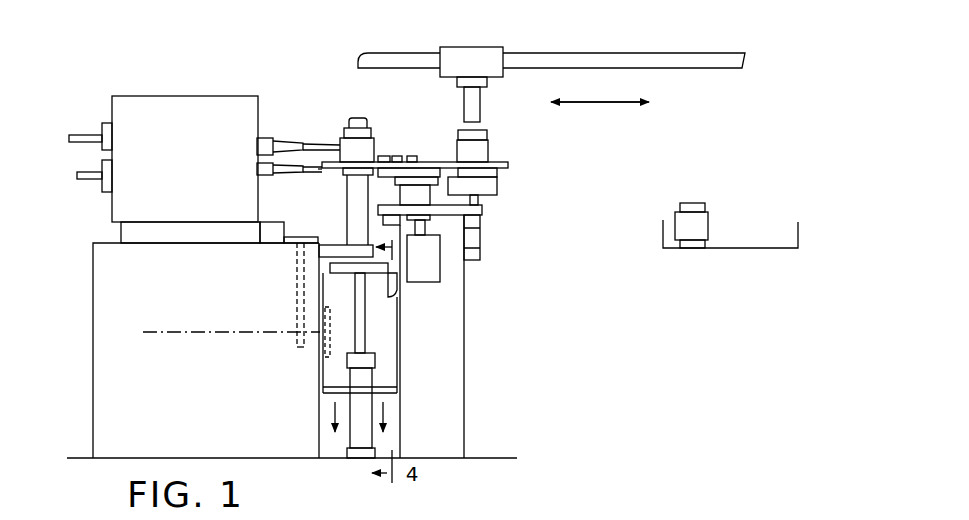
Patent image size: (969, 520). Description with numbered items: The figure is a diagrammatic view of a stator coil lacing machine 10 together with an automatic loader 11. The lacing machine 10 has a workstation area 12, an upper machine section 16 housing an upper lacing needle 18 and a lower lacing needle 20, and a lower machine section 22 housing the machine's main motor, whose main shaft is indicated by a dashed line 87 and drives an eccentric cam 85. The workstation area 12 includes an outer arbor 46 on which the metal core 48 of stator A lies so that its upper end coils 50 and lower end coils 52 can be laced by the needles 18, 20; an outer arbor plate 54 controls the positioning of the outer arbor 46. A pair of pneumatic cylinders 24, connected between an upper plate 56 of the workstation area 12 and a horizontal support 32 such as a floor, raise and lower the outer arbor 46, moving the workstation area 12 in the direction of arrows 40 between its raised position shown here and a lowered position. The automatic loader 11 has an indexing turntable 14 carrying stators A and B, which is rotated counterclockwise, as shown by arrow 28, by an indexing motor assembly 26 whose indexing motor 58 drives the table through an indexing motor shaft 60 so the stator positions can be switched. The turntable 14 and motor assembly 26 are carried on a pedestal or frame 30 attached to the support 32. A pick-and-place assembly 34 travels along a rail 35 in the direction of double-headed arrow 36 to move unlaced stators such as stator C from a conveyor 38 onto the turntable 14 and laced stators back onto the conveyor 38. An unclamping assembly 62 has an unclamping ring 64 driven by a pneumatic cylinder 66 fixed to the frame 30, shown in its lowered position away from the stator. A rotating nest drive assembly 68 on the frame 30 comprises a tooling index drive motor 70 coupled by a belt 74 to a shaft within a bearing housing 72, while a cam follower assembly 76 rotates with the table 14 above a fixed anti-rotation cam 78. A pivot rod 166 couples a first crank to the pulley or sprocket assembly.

The stator coil lacing machine 10 is at (128, 80).
The automatic loader 11 is at (323, 170).
The workstation area 12 is at (348, 117).
The indexing turntable 14 is at (512, 166).
The upper machine section 16 is at (110, 200).
The upper lacing needle 18 is at (313, 150).
The lower lacing needle 20 is at (303, 172).
The lower machine section 22 is at (93, 378).
The pneumatic cylinders 24 is at (360, 428).
The indexing motor assembly 26 is at (426, 197).
The arrow 28 is at (422, 122).
The pedestal or frame 30 is at (452, 390).
The horizontal support 32 is at (503, 458).
The pick-and-place assembly 34 is at (482, 46).
The rail 35 is at (660, 52).
The double-headed arrow 36 is at (623, 105).
The conveyor 38 is at (758, 250).
The arrows 40 is at (330, 408).
The outer arbor 46 is at (385, 182).
The metal core 48 is at (340, 148).
The upper end coils 50 is at (347, 130).
The lower end coils 52 is at (347, 177).
The outer arbor plate 54 is at (383, 270).
The upper plate 56 is at (388, 280).
The indexing motor 58 is at (412, 196).
The indexing motor shaft 60 is at (420, 165).
The unclamping assembly 62 is at (493, 199).
The unclamping ring 64 is at (497, 186).
The pneumatic cylinder 66 is at (473, 247).
The rotating nest drive assembly 68 is at (380, 223).
The tooling index drive motor 70 is at (432, 282).
The bearing housing 72 is at (343, 213).
The belt 74 is at (407, 226).
The cam follower assembly 76 is at (393, 157).
The anti-rotation cam 78 is at (462, 137).
The eccentric cam 85 is at (320, 348).
The main shaft of motor 87 is at (188, 334).
The pivot rod 166 is at (297, 343).